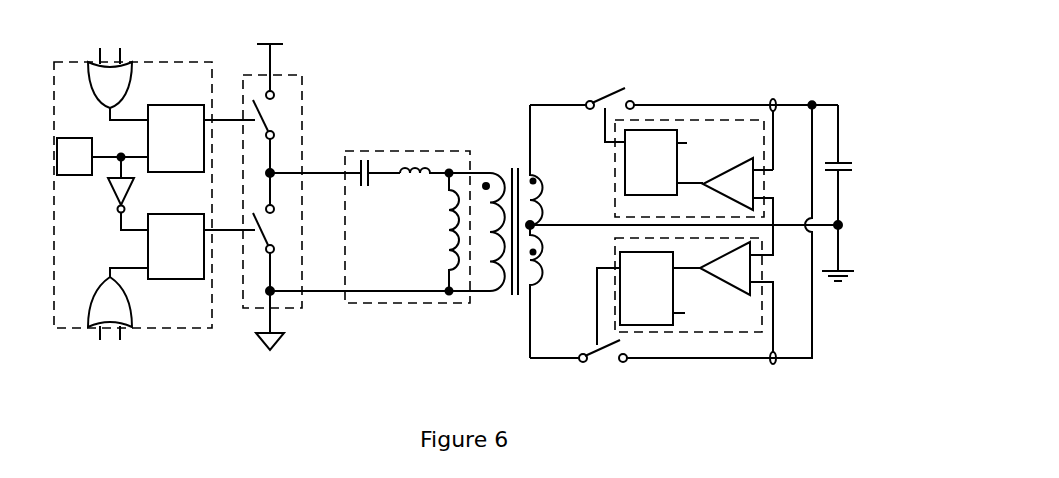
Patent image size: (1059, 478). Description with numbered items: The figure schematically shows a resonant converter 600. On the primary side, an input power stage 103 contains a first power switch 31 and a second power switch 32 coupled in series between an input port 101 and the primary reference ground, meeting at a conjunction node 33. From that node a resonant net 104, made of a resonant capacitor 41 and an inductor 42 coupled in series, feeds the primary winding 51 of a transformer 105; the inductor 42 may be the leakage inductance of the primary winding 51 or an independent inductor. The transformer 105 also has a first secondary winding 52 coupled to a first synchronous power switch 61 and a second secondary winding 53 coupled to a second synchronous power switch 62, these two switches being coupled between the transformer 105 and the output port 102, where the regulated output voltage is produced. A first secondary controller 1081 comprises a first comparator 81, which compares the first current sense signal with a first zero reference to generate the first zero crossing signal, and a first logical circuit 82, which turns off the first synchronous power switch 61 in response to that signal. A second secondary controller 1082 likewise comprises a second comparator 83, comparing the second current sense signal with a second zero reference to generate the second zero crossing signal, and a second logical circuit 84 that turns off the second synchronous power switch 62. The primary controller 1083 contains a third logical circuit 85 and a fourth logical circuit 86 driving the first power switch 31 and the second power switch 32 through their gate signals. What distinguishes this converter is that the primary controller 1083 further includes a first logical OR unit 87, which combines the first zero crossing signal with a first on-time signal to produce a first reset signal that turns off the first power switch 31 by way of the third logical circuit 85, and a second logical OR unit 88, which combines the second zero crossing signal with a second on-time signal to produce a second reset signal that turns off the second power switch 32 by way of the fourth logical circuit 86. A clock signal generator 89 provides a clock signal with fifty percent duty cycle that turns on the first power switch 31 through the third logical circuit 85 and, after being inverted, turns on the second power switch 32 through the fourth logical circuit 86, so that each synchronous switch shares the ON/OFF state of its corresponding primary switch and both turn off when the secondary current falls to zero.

The resonant converter 600 is at (827, 50).
The input port 101 is at (272, 58).
The output port 102 is at (838, 183).
The input power stage 103 is at (303, 87).
The resonant net 104 is at (412, 150).
The transformer 105 is at (512, 169).
The first power switch 31 is at (274, 132).
The second power switch 32 is at (273, 253).
The conjunction node 33 is at (273, 176).
The resonant capacitor 41 is at (377, 187).
The inductor 42 is at (429, 231).
The primary winding 51 is at (477, 232).
The first secondary winding 52 is at (545, 165).
The second secondary winding 53 is at (543, 291).
The first synchronous power switch 61 is at (582, 95).
The second synchronous power switch 62 is at (578, 361).
The first comparator 81 is at (738, 191).
The first logical circuit 82 is at (664, 162).
The second comparator 83 is at (736, 288).
The second logical circuit 84 is at (660, 288).
The third logical circuit 85 is at (176, 138).
The fourth logical circuit 86 is at (176, 246).
The first logical OR unit 87 is at (118, 84).
The second logical OR unit 88 is at (118, 304).
The clock signal generator 89 is at (74, 156).
The first secondary controller 1081 is at (694, 172).
The second secondary controller 1082 is at (694, 288).
The primary controller 1083 is at (133, 196).